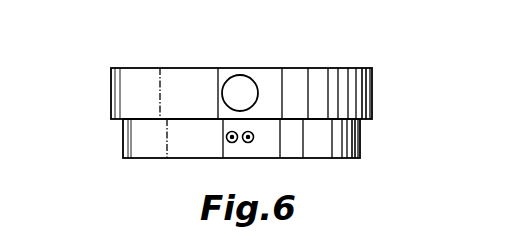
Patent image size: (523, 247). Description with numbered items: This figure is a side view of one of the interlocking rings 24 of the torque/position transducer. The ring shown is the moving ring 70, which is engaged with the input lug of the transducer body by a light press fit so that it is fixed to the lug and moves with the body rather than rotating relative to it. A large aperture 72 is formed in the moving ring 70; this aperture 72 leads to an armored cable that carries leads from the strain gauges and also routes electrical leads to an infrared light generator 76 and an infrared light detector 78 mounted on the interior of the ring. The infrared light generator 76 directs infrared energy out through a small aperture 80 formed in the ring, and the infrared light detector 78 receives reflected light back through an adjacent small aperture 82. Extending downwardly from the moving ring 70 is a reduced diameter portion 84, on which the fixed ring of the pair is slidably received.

The interlocking rings 24 is at (376, 63).
The moving ring 70 is at (111, 98).
The aperture 72 is at (241, 79).
The infrared light generator 76 is at (227, 134).
The infrared light detector 78 is at (254, 134).
The aperture 80 is at (233, 143).
The aperture 82 is at (250, 143).
The reduced diameter portion 84 is at (361, 142).